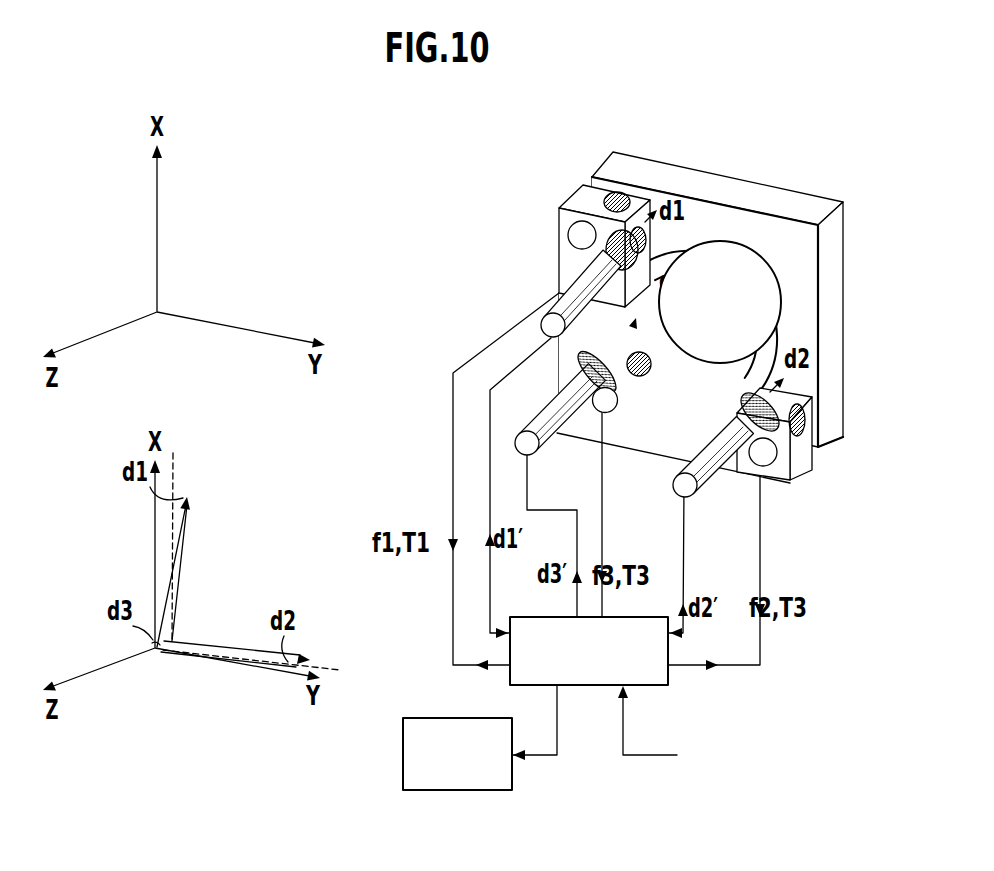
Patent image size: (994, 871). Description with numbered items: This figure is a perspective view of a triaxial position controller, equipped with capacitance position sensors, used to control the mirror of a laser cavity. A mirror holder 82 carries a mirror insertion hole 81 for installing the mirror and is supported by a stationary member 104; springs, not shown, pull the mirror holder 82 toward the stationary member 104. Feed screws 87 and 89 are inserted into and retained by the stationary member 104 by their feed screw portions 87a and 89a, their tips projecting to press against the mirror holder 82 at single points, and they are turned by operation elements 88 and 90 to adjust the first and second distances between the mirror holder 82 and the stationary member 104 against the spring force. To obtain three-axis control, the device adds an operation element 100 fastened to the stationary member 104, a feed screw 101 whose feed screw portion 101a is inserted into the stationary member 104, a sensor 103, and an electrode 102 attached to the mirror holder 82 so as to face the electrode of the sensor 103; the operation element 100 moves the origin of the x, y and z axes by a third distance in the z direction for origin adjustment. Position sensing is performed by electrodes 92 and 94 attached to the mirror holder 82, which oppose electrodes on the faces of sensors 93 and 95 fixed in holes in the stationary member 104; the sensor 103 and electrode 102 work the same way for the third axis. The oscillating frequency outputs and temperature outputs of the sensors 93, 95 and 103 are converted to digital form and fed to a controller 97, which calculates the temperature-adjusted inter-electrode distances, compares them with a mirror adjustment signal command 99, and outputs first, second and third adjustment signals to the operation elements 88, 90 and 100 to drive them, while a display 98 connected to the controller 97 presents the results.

The mirror insertion hole 81 is at (720, 290).
The mirror holder 82 is at (709, 187).
The feed screw 87 is at (655, 240).
The feed screw portion 87a is at (587, 217).
The operation element 88 is at (580, 308).
The feed screw 89 is at (758, 393).
The feed screw portion 89a is at (737, 417).
The operation element 90 is at (703, 465).
The electrode 92 is at (620, 185).
The sensor 93 is at (566, 238).
The electrode 94 is at (807, 470).
The sensor 95 is at (762, 464).
The controller 97 is at (591, 690).
The display 98 is at (497, 793).
The mirror adjustment signal command 99 is at (657, 758).
The operation element 100 is at (560, 432).
The feed screw 101 is at (582, 372).
The feed screw portion 101a is at (600, 408).
The electrode 102 is at (650, 357).
The sensor 103 is at (607, 408).
The stationary member 104 is at (663, 452).